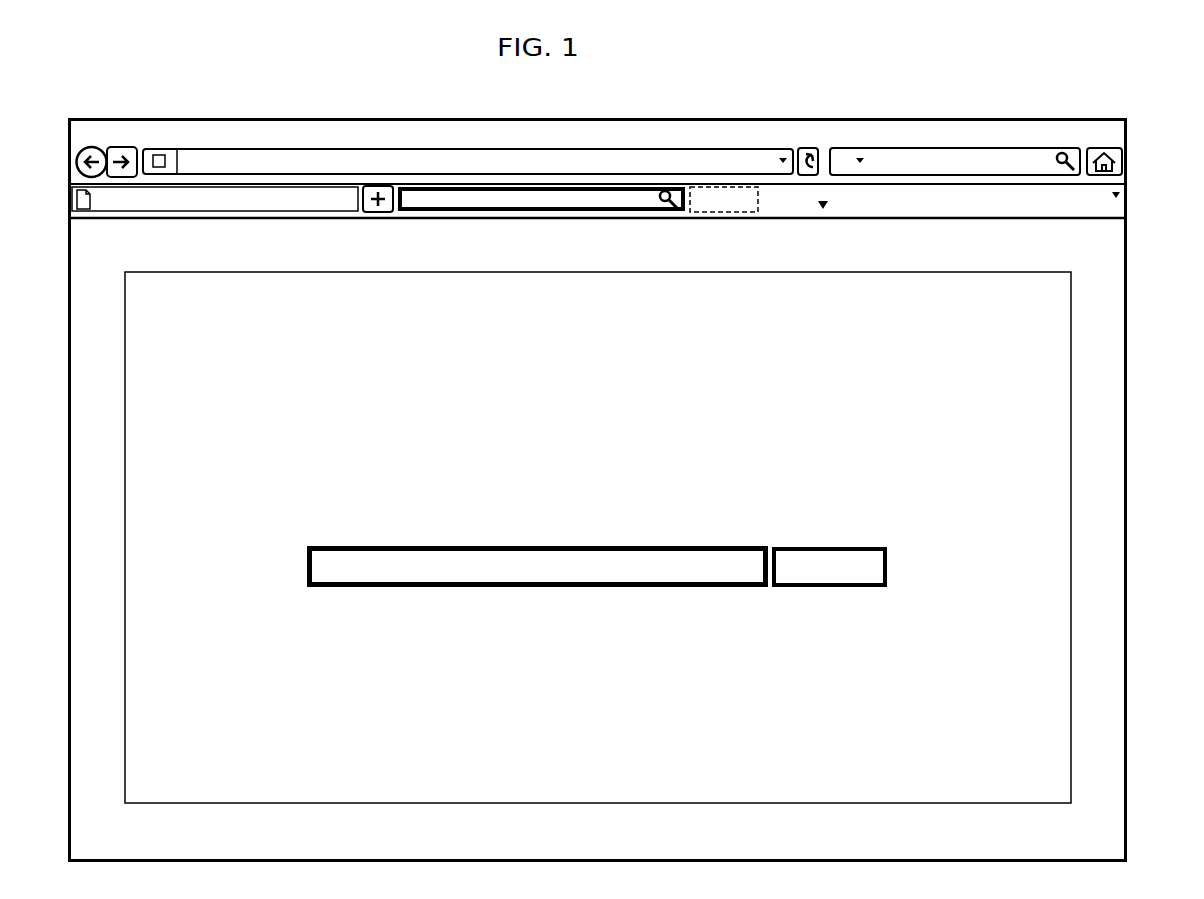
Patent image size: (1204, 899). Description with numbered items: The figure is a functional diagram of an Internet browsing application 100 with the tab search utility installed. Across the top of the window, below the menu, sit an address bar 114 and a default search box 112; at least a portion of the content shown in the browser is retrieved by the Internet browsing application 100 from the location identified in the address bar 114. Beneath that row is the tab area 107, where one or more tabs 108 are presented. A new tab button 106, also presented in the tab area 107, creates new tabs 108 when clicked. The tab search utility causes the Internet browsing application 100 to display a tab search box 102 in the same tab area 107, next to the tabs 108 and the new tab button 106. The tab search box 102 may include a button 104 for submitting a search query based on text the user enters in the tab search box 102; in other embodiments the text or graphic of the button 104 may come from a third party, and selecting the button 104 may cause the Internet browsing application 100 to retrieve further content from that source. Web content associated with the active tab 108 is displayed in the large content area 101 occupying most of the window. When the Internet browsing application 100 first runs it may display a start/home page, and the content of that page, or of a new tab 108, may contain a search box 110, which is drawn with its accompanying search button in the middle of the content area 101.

The Internet browsing application 100 is at (767, 117).
The content area 101 is at (1082, 290).
The tab search box 102 is at (512, 195).
The button 104 is at (700, 203).
The new tab button 106 is at (370, 208).
The tab area 107 is at (828, 205).
The tab 108 is at (140, 202).
The search box 110 is at (653, 550).
The default search box 112 is at (905, 157).
The address bar 114 is at (612, 158).